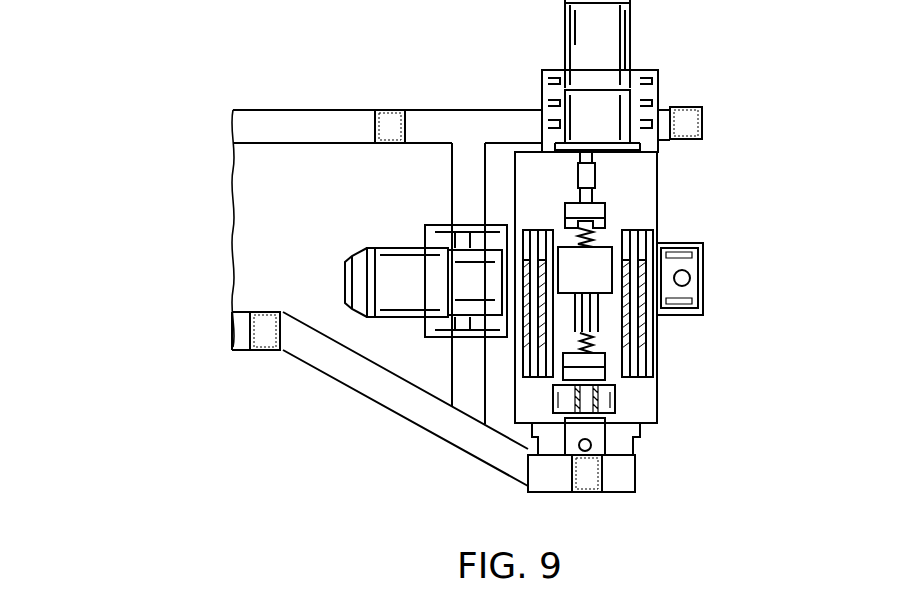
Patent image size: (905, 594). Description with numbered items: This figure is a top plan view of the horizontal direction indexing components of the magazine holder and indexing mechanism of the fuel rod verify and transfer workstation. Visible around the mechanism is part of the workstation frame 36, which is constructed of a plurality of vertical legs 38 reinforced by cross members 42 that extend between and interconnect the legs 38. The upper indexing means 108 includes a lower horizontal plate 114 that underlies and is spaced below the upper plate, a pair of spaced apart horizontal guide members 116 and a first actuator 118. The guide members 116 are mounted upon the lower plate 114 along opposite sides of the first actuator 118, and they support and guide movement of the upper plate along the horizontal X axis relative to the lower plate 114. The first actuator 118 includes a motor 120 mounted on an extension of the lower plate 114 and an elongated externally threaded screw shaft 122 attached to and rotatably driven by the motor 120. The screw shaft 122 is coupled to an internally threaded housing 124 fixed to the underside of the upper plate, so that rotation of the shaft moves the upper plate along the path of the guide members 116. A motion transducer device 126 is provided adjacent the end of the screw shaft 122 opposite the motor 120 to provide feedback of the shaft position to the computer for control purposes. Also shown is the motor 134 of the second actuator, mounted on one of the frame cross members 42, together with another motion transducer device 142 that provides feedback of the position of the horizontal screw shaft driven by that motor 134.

The frame 36 is at (356, 396).
The vertical legs 38 is at (392, 110).
The cross members 42 is at (490, 110).
The upper indexing means 108 is at (700, 202).
The lower horizontal plate 114 is at (657, 228).
The horizontal guide members 116 is at (660, 334).
The first actuator 118 is at (622, 203).
The motor 120 is at (630, 25).
The screw shaft 122 is at (606, 362).
The internally threaded housing 124 is at (598, 252).
The motion transducer device 126 is at (593, 445).
The motor 134 is at (428, 289).
The motion transducer device 142 is at (678, 306).